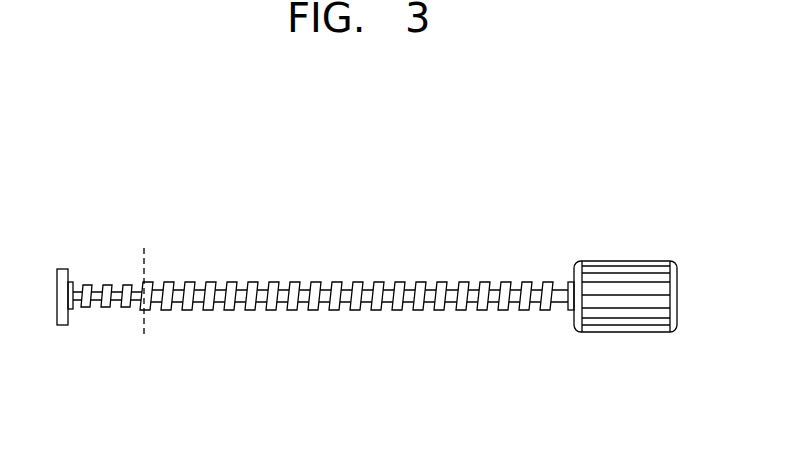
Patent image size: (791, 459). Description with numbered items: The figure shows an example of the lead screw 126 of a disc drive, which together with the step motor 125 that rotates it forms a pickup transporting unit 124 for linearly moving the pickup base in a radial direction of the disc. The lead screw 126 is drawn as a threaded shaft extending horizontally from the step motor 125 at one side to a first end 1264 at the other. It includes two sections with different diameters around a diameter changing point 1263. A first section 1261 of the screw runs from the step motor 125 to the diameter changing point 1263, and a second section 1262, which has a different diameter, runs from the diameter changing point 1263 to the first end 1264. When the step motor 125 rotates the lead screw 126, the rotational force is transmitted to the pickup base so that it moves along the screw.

The pickup transporting unit 124 is at (613, 153).
The step motor 125 is at (623, 261).
The lead screw 126 is at (370, 209).
The first section 1261 is at (558, 265).
The second section 1262 is at (143, 265).
The diameter changing point 1263 is at (145, 338).
The first end 1264 is at (66, 338).